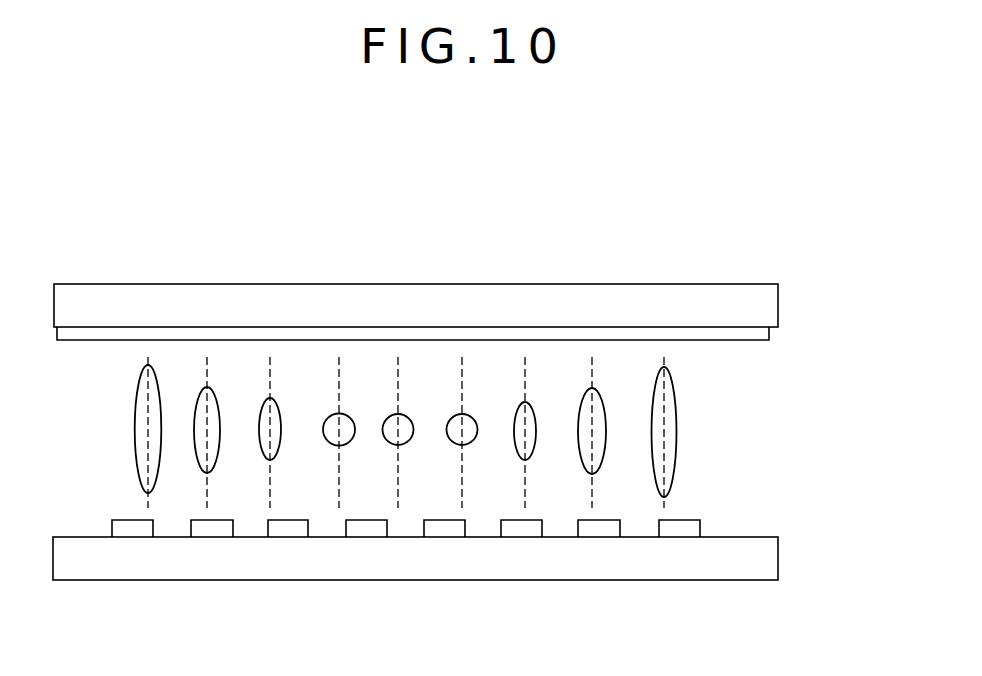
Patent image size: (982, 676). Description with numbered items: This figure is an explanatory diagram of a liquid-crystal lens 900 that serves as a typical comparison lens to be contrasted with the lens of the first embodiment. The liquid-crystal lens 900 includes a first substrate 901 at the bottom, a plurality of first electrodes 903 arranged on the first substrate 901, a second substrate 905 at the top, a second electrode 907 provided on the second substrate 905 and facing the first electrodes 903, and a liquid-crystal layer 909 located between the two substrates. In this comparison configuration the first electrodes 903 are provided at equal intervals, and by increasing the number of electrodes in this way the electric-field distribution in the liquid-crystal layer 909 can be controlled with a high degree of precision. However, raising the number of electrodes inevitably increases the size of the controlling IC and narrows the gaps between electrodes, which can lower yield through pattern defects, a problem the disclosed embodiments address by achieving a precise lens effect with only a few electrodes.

The liquid-crystal lens 900 is at (495, 226).
The first substrate 901 is at (778, 557).
The first electrodes 903 is at (678, 531).
The second substrate 905 is at (778, 300).
The second electrode 907 is at (769, 337).
The liquid-crystal layer 909 is at (755, 431).